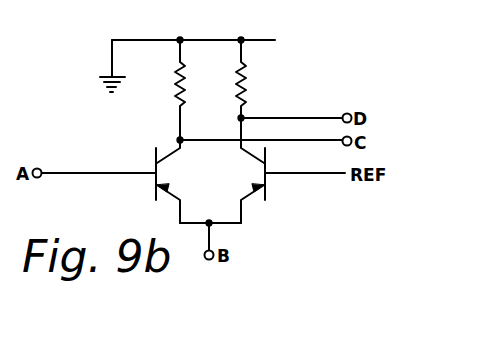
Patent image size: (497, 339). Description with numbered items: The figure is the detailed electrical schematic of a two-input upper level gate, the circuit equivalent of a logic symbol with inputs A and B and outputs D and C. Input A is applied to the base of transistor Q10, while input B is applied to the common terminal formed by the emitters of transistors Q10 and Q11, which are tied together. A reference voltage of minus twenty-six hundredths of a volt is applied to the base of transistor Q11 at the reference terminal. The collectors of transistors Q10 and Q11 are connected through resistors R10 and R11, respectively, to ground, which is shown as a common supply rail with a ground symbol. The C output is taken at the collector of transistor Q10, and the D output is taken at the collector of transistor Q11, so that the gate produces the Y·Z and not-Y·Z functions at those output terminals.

The resistor R10 is at (200, 90).
The resistor R11 is at (261, 79).
The transistor Q10 is at (177, 181).
The transistor Q11 is at (256, 170).